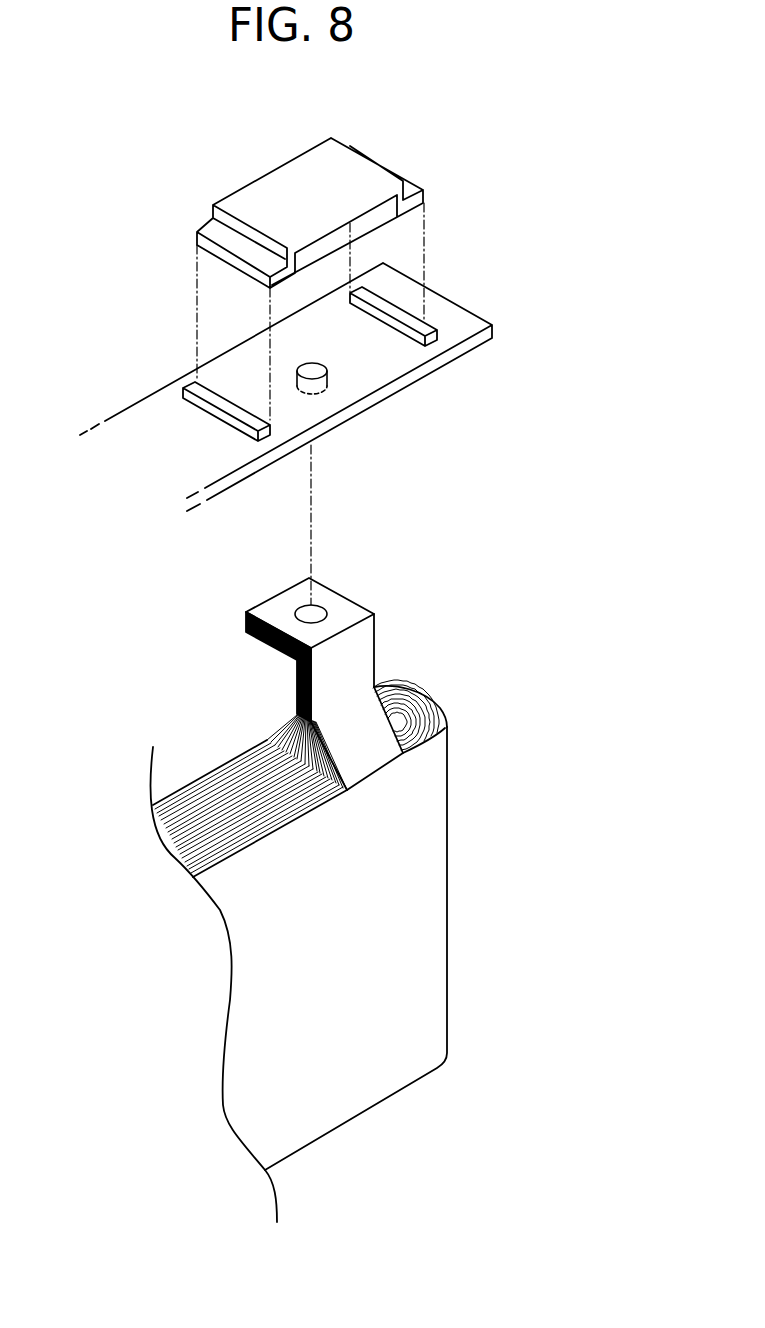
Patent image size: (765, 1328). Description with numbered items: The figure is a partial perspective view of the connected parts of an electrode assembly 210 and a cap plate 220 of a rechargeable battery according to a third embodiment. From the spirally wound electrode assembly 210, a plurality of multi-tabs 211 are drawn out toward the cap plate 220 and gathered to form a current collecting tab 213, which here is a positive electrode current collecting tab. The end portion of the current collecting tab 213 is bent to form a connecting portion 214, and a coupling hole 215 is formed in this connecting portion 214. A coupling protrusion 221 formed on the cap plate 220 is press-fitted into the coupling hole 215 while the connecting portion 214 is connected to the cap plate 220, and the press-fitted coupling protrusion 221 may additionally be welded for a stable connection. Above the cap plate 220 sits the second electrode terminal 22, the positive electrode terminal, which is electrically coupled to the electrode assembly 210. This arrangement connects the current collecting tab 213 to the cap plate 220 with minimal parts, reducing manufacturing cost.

The second electrode terminal 22 is at (287, 183).
The cap plate 220 is at (445, 281).
The coupling protrusion 221 is at (306, 367).
The electrode assembly 210 is at (478, 839).
The multi-tabs 211 is at (283, 723).
The current collecting tab 213 is at (358, 653).
The connecting portion 214 is at (343, 590).
The coupling hole 215 is at (309, 606).